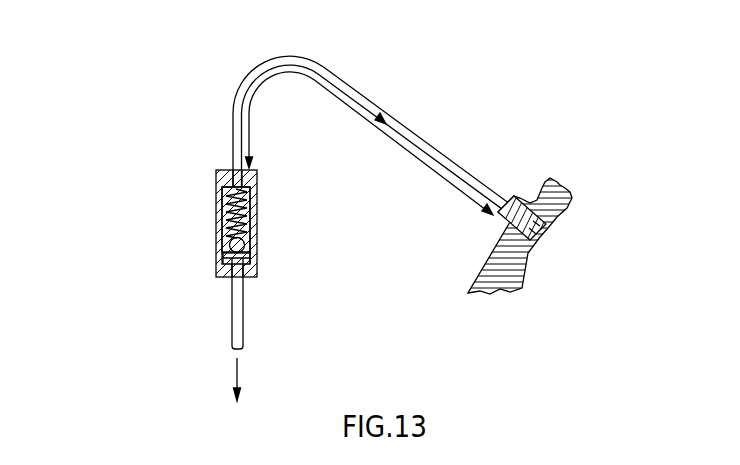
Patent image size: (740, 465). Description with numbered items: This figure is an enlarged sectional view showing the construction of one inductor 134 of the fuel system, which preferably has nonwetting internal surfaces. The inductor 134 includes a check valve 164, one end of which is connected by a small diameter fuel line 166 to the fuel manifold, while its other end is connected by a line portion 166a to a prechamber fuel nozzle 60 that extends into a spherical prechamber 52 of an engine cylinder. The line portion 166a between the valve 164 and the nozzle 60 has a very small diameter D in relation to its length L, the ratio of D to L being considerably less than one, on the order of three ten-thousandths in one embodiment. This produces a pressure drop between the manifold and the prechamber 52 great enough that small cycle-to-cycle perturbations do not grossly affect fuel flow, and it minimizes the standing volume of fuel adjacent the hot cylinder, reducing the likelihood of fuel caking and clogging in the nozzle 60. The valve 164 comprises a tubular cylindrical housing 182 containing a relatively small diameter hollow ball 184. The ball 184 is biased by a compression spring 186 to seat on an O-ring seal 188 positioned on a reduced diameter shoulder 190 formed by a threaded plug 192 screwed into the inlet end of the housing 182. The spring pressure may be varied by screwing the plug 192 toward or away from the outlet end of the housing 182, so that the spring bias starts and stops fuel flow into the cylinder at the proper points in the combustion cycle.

The inductor 134 is at (124, 72).
The line portion 166a is at (278, 62).
The length L is at (370, 143).
The diameter D is at (391, 110).
The check valve 164 is at (216, 172).
The tubular cylindrical housing 182 is at (218, 210).
The compression spring 186 is at (246, 208).
The hollow ball 184 is at (223, 242).
The O-ring seal 188 is at (214, 266).
The reduced diameter shoulder 190 is at (255, 265).
The threaded plug 192 is at (252, 278).
The fuel line 166 is at (240, 316).
The prechamber 52 is at (507, 267).
The prechamber fuel nozzle 60 is at (517, 202).